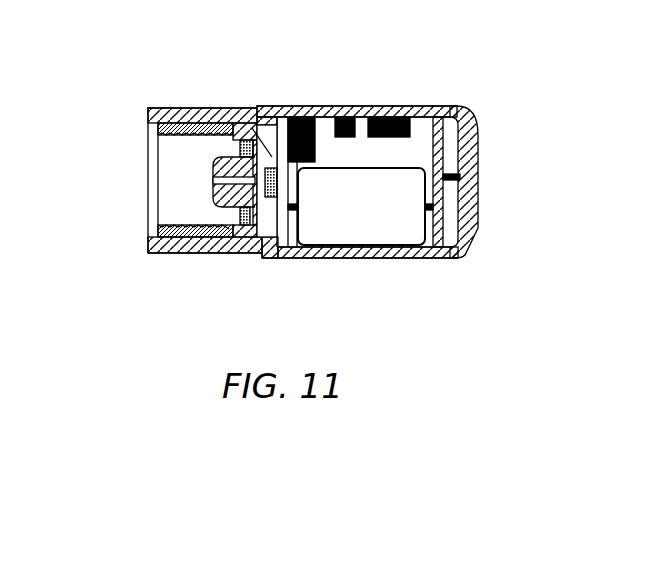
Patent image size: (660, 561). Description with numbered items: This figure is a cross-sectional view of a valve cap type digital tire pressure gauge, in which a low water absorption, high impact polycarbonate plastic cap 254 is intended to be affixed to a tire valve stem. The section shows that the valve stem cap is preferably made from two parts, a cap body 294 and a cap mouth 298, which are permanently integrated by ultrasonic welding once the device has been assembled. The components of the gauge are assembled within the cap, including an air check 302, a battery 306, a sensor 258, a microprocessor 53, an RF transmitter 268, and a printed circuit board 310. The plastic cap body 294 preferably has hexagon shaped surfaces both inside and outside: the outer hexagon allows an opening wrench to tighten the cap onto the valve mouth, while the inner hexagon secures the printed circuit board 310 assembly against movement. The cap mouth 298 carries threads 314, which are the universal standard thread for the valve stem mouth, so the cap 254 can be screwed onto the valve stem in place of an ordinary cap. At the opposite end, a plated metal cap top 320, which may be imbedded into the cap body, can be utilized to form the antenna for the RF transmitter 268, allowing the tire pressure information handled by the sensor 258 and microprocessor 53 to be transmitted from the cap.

The cap 254 is at (467, 75).
The sensor 258 is at (218, 112).
The RF transmitter 268 is at (372, 115).
The cap body 294 is at (428, 258).
The cap mouth 298 is at (222, 252).
The air check 302 is at (213, 167).
The battery 306 is at (362, 238).
The printed circuit board 310 is at (310, 108).
The threads 314 is at (198, 220).
The cap top 320 is at (478, 148).
The microprocessor 53 is at (285, 107).